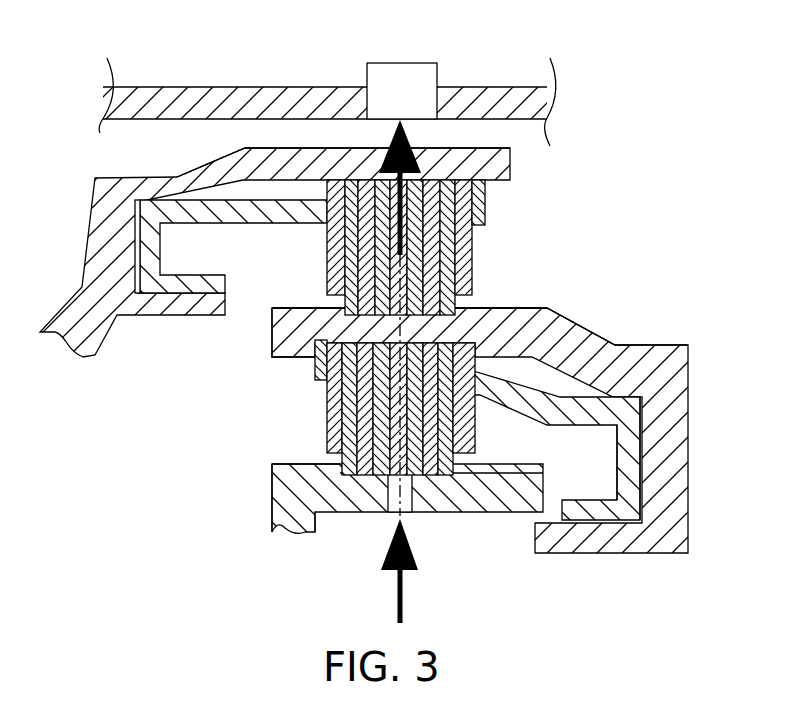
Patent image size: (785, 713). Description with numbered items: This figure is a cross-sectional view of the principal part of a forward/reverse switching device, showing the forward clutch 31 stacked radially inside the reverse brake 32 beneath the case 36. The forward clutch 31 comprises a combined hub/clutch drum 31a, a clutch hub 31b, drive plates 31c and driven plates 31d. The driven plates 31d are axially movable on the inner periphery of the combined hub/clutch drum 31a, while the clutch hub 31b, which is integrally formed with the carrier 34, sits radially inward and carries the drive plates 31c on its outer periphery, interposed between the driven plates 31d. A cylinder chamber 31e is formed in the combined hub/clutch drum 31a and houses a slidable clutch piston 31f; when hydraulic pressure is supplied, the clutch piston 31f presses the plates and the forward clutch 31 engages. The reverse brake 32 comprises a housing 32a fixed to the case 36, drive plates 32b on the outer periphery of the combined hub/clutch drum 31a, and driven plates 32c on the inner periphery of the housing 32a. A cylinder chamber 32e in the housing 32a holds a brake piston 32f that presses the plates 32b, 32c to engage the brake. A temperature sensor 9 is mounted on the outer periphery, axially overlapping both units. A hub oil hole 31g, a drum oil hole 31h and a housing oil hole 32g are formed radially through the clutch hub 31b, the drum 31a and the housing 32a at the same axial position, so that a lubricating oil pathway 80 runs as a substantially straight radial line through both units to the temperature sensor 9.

The temperature sensor 9 is at (411, 76).
The case 36 is at (478, 101).
The reverse brake 32 is at (497, 200).
The housing 32a is at (258, 165).
The drive plate 32b is at (430, 219).
The driven plate 32c is at (430, 196).
The cylinder chamber 32e is at (147, 232).
The brake piston 32f is at (145, 264).
The housing oil hole 32g is at (386, 166).
The forward clutch 31 is at (655, 343).
The combined hub/clutch drum 31a is at (627, 343).
The clutch hub 31b is at (478, 513).
The drive plate 31c is at (383, 474).
The driven plate 31d is at (370, 457).
The cylinder chamber 31e is at (640, 436).
The clutch piston 31f is at (632, 484).
The hub oil hole 31g is at (394, 514).
The drum oil hole 31h is at (387, 324).
The carrier 34 is at (291, 487).
The lubricating oil pathway 80 is at (403, 598).